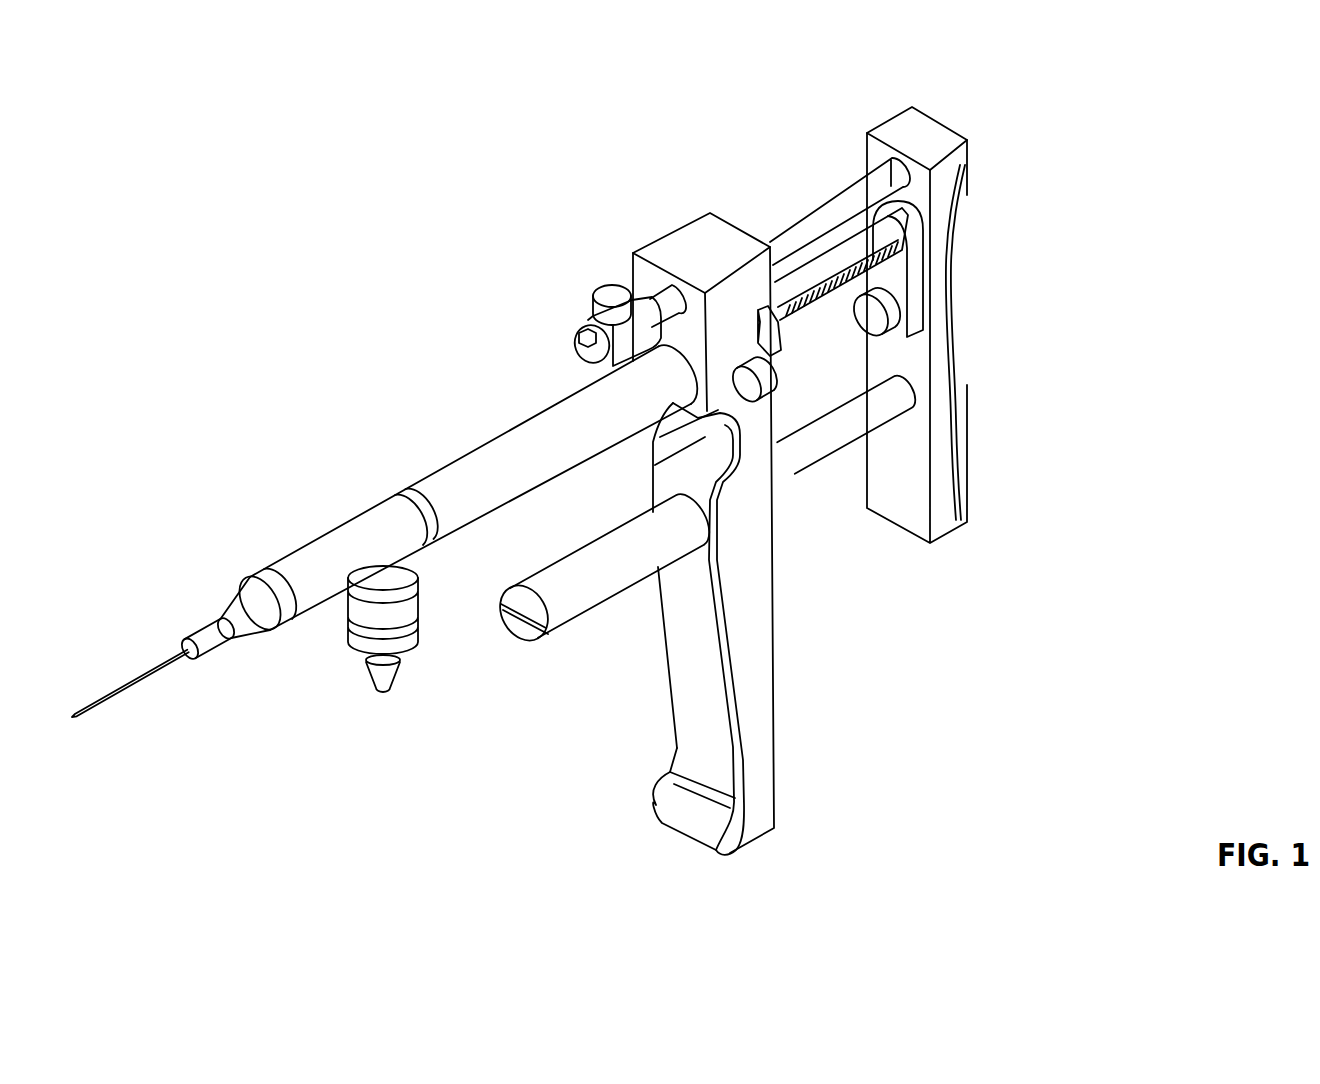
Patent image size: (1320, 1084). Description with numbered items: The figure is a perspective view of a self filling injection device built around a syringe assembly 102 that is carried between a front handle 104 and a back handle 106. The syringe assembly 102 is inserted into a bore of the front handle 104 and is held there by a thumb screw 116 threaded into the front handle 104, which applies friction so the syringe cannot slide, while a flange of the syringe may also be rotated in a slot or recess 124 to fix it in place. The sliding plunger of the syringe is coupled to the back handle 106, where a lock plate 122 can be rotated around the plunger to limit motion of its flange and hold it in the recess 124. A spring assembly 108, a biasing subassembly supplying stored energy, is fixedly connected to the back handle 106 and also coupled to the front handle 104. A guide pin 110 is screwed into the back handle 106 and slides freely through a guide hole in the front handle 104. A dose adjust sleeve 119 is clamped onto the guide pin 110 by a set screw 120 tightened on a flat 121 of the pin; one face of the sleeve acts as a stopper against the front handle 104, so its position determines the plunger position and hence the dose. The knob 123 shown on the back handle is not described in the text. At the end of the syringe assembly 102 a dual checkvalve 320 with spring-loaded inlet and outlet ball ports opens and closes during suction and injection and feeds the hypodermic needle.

The syringe assembly 102 is at (470, 440).
The front handle 104 is at (748, 668).
The back handle 106 is at (950, 200).
The spring assembly 108 is at (585, 578).
The guide pin 110 is at (777, 203).
The thumb screw 116 is at (756, 398).
The dose adjust sleeve 119 is at (627, 335).
The set screw 120 is at (602, 297).
The flat 121 is at (831, 199).
The lock plate 122 is at (910, 303).
The adjustment knob 123 is at (900, 343).
The recess 124 is at (950, 280).
The dual checkvalve 320 is at (333, 543).